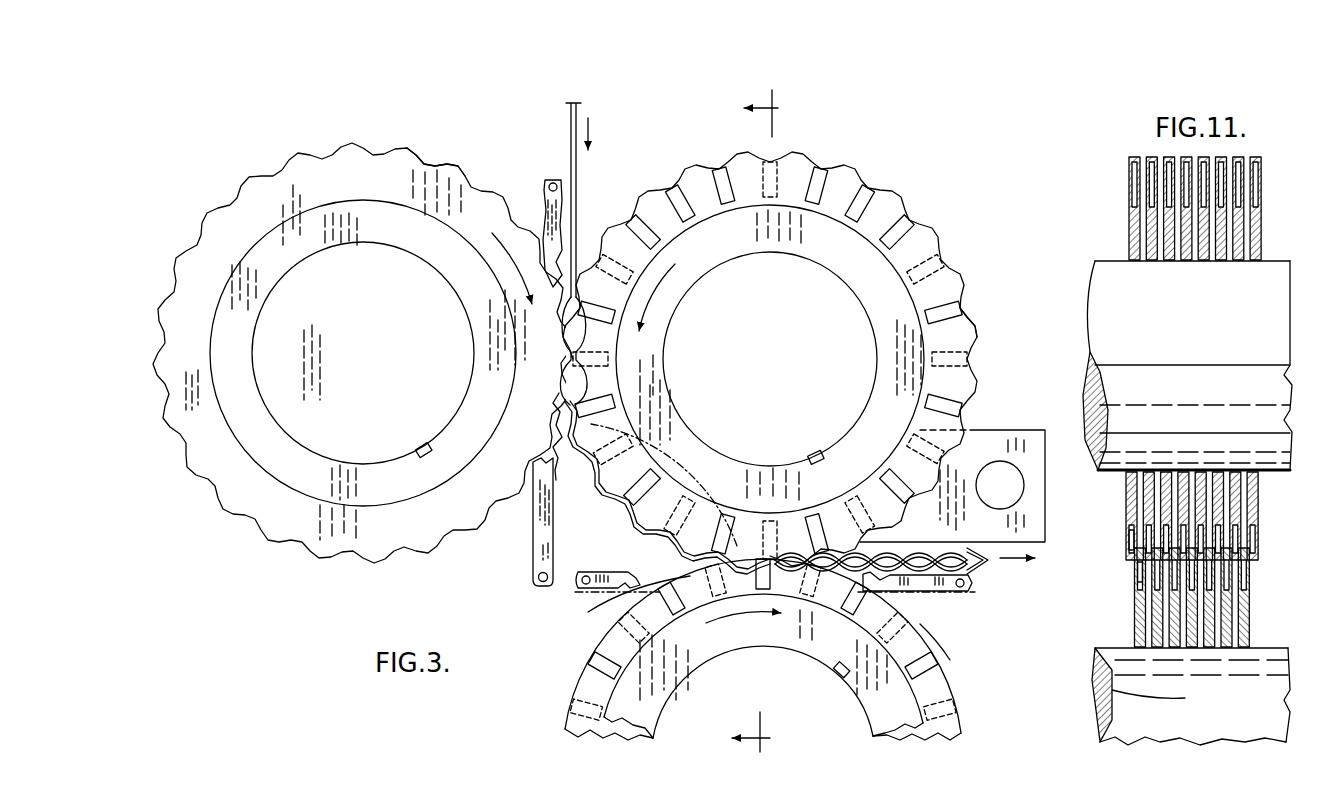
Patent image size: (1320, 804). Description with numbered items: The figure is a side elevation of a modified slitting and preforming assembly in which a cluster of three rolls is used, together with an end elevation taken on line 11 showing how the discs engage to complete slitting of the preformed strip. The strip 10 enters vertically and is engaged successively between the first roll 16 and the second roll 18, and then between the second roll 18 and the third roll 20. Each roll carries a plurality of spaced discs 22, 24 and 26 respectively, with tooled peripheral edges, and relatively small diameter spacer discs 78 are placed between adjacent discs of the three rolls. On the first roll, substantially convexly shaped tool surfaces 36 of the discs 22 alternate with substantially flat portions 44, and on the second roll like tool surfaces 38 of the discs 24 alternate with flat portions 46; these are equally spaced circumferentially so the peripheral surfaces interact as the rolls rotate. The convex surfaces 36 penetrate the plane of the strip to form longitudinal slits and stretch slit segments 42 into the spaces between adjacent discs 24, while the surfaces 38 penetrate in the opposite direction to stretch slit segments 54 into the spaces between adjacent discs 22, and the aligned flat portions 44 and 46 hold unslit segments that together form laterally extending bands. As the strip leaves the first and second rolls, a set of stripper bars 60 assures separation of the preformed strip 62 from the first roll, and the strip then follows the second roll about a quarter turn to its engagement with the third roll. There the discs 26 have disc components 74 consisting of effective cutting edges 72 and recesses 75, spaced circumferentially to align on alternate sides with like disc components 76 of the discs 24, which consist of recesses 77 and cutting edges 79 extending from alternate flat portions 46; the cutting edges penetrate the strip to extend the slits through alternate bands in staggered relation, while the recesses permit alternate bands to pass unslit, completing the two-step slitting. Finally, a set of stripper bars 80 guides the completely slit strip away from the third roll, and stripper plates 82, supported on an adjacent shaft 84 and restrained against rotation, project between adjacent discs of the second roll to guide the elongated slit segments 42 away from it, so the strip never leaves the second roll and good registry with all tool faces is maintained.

In FIG. 3, the strip 10 is at (571, 112).
In FIG. 3, the section line 11— 11 is at (771, 421).
In FIG. 3, the first roll 16 is at (296, 437).
In FIG. 3, the second roll 18 is at (794, 347).
In FIG. 11, the second roll 18 is at (1123, 308).
In FIG. 3, the third roll 20 is at (747, 649).
In FIG. 11, the third roll 20 is at (1140, 688).
In FIG. 3, the discs 22 is at (363, 334).
In FIG. 3, the discs 24 is at (855, 255).
In FIG. 11, the discs 24 is at (1128, 531).
In FIG. 3, the discs 26 is at (640, 688).
In FIG. 11, the discs 26 is at (1135, 615).
In FIG. 3, the tool surfaces 36 is at (454, 163).
In FIG. 3, the tool surfaces 38 is at (690, 174).
In FIG. 3, the slit segments 42 is at (900, 546).
In FIG. 3, the flat portions 44 is at (425, 162).
In FIG. 3, the flat portions 46 is at (725, 168).
In FIG. 3, the slit segments 54 is at (910, 578).
In FIG. 3, the stripper bars 60 is at (530, 548).
In FIG. 3, the preformed strip 62 is at (565, 470).
In FIG. 3, the cutting edges 72 is at (938, 650).
In FIG. 3, the disc components 74 is at (680, 580).
In FIG. 11, the disc components 74 is at (1135, 574).
In FIG. 3, the recesses 75 is at (920, 650).
In FIG. 3, the disc components 76 is at (634, 498).
In FIG. 11, the disc components 76 is at (1138, 553).
In FIG. 3, the recesses 77 is at (948, 306).
In FIG. 11, the spacer discs 78 is at (1247, 502).
In FIG. 3, the cutting edges 79 is at (985, 316).
In FIG. 3, the stripper bars 80 is at (592, 585).
In FIG. 11, the stripper bars 80 is at (1240, 579).
In FIG. 3, the stripper plates 82 is at (972, 463).
In FIG. 11, the stripper plates 82 is at (1253, 536).
In FIG. 3, the shaft 84 is at (1015, 490).